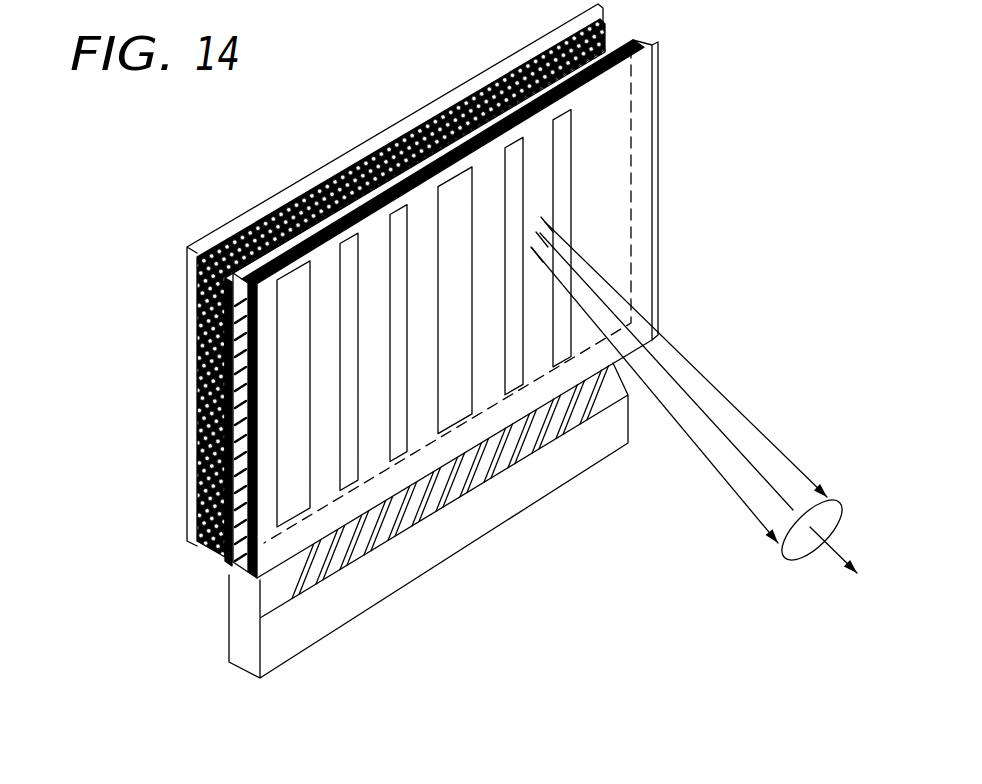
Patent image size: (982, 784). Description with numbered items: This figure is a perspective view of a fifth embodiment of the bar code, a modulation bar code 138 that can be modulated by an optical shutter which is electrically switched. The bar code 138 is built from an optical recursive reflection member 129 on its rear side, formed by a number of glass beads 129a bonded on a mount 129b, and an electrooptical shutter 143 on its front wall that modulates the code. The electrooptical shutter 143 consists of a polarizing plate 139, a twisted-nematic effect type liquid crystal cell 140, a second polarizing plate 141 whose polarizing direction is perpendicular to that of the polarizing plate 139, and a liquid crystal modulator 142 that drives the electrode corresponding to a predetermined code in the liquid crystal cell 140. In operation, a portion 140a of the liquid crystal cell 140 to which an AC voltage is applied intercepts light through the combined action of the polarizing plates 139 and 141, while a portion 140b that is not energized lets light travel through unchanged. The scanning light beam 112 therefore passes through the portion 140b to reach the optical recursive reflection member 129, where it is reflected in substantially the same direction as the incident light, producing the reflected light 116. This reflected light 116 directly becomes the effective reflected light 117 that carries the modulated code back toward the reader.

The scanning light beam 112 is at (833, 547).
The reflected light 116 is at (785, 382).
The effective reflected light 117 is at (696, 401).
The optical recursive reflection member 129 is at (86, 217).
The glass beads 129a is at (213, 283).
The mount 129b is at (213, 233).
The bar code 138 is at (243, 190).
The polarizing plate 139 is at (617, 36).
The liquid crystal cell 140 is at (650, 47).
The portion applied with AC voltage 140a is at (567, 203).
The portion not applied with AC voltage 140b is at (573, 253).
The polarizing plate 141 is at (654, 88).
The liquid crystal modulator 142 is at (483, 540).
The electrooptical shutter 143 is at (792, 134).